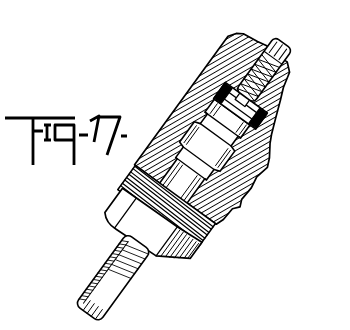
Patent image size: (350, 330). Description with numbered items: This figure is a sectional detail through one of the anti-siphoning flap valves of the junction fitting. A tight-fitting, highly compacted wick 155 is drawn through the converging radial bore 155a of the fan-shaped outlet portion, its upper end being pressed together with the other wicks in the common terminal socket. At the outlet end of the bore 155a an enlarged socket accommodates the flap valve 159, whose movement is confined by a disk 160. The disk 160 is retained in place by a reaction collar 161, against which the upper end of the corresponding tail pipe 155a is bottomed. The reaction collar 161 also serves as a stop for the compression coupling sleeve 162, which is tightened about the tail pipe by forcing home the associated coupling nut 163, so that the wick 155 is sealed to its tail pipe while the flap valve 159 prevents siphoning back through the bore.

The wick 155 is at (283, 62).
The converging radial bore 155a is at (136, 265).
The flap valve 159 is at (244, 96).
The disk 160 is at (228, 82).
The reaction collar 161 is at (247, 130).
The compression coupling sleeve 162 is at (243, 174).
The coupling nut 163 is at (180, 250).